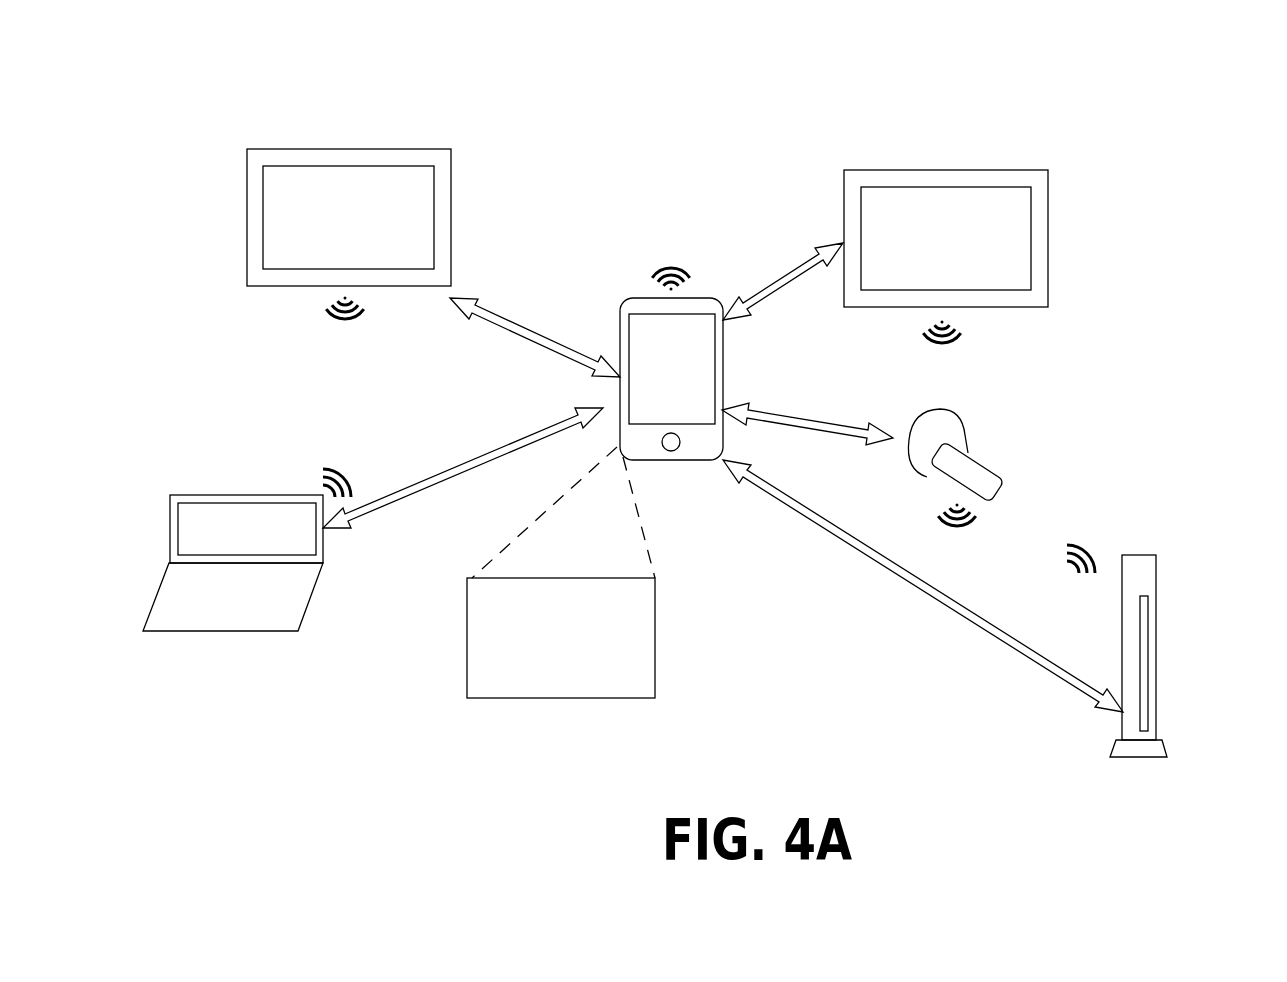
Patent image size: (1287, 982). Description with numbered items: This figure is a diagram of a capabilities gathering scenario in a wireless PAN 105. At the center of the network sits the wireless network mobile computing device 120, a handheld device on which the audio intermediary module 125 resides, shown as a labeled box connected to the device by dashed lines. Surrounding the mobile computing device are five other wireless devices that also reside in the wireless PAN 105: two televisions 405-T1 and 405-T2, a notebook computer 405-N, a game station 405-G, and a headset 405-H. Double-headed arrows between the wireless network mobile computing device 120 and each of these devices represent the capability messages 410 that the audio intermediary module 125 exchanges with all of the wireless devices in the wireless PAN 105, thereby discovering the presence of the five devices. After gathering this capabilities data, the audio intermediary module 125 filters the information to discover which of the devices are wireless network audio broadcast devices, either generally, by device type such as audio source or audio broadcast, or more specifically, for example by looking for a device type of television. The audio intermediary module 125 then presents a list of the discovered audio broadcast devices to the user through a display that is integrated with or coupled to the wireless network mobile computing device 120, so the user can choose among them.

The wireless PAN 105 is at (656, 102).
The television 405-T1 is at (351, 117).
The television 405-T2 is at (948, 137).
The notebook computer 405-N is at (242, 665).
The headset 405-H is at (998, 410).
The game station 405-G is at (1125, 522).
The wireless network mobile computing device 120 is at (674, 493).
The audio intermediary module 125 is at (544, 689).
The capability messages 410 is at (485, 302).